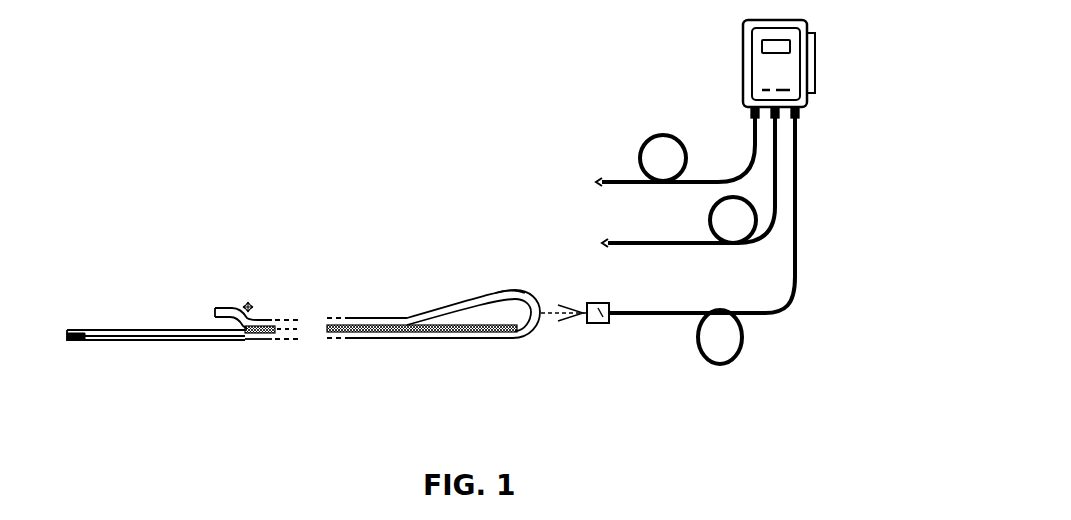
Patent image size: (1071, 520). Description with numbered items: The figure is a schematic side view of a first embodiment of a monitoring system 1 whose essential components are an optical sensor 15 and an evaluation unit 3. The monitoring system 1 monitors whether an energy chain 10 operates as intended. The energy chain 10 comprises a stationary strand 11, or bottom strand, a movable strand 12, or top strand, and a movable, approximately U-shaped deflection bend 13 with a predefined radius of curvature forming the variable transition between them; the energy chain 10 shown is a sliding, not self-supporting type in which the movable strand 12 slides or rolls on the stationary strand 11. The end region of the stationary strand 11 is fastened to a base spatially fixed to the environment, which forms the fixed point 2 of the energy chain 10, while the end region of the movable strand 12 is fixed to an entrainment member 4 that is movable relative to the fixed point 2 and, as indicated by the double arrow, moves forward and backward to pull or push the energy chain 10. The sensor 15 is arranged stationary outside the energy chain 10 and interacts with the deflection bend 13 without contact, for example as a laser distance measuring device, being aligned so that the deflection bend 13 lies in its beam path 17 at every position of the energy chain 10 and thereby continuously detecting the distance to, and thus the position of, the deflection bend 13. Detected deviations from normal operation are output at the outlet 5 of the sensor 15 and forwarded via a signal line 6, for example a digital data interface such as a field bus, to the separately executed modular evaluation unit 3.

The monitoring system 1 is at (92, 95).
The fixed point 2 is at (72, 344).
The evaluation unit 3 is at (772, 75).
The entrainment member 4 is at (249, 293).
The outlet 5 is at (613, 323).
The signal line 6 is at (768, 315).
The energy chain 10 is at (137, 331).
The stationary strand 11 is at (229, 343).
The movable strand 12 is at (386, 315).
The deflection bend 13 is at (519, 278).
The sensor 15 is at (601, 314).
The beam path 17 is at (552, 321).